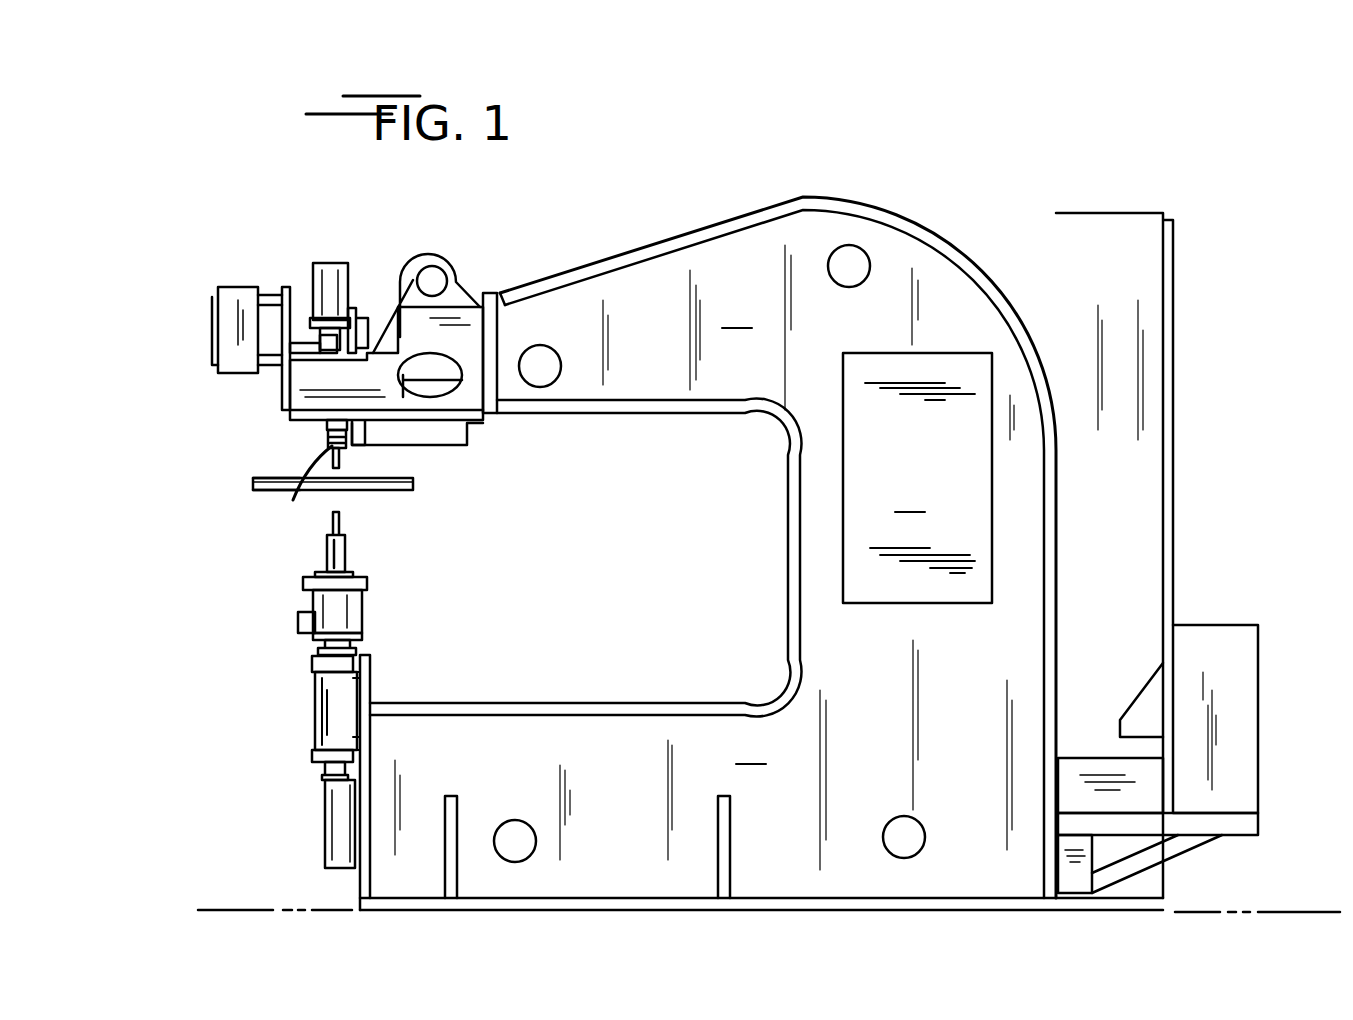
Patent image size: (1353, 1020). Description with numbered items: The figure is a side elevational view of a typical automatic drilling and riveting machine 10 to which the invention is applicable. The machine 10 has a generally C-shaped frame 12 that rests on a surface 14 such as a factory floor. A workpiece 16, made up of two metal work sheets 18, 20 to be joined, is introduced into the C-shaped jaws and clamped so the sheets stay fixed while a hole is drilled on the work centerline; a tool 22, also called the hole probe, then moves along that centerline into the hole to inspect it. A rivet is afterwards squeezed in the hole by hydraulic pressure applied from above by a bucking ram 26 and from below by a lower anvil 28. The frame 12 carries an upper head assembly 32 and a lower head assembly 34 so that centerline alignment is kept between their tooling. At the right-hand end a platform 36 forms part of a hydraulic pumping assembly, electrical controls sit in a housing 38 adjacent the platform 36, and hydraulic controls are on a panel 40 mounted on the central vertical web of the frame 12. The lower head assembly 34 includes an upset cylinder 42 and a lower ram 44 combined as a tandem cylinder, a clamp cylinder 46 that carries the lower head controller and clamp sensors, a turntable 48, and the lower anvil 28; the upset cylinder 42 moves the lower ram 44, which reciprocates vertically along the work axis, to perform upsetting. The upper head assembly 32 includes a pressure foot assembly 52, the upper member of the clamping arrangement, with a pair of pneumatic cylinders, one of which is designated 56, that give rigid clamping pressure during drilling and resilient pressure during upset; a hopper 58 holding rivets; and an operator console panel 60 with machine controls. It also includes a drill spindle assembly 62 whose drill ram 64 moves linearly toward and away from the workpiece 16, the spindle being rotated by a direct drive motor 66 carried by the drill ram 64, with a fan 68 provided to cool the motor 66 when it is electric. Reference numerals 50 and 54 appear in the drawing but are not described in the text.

The automatic drilling and riveting machine 10 is at (965, 185).
The C-shaped frame 12 is at (761, 553).
The surface 14 is at (256, 905).
The workpiece 16 is at (407, 498).
The work sheet 18 is at (260, 487).
The work sheet 20 is at (257, 493).
The tool 22 is at (360, 467).
The bucking ram 26 is at (327, 426).
The lower anvil 28 is at (327, 532).
The upper head assembly 32 is at (310, 443).
The lower head assembly 34 is at (340, 724).
The platform 36 is at (1250, 823).
The housing 38 is at (1137, 368).
The panel 40 is at (917, 478).
The upset cylinder 42 is at (325, 797).
The lower ram 44 is at (332, 694).
The clamp cylinder 46 is at (322, 603).
The turntable 48 is at (367, 583).
The valve block 50 is at (298, 622).
The pressure foot assembly 52 is at (362, 458).
The axis line 54 is at (299, 491).
The pneumatic cylinder 56 is at (320, 428).
The hopper 58 is at (448, 432).
The operator console panel 60 is at (237, 298).
The drill spindle assembly 62 is at (307, 343).
The drill ram 64 is at (308, 343).
The motor 66 is at (327, 272).
The fan 68 is at (447, 270).